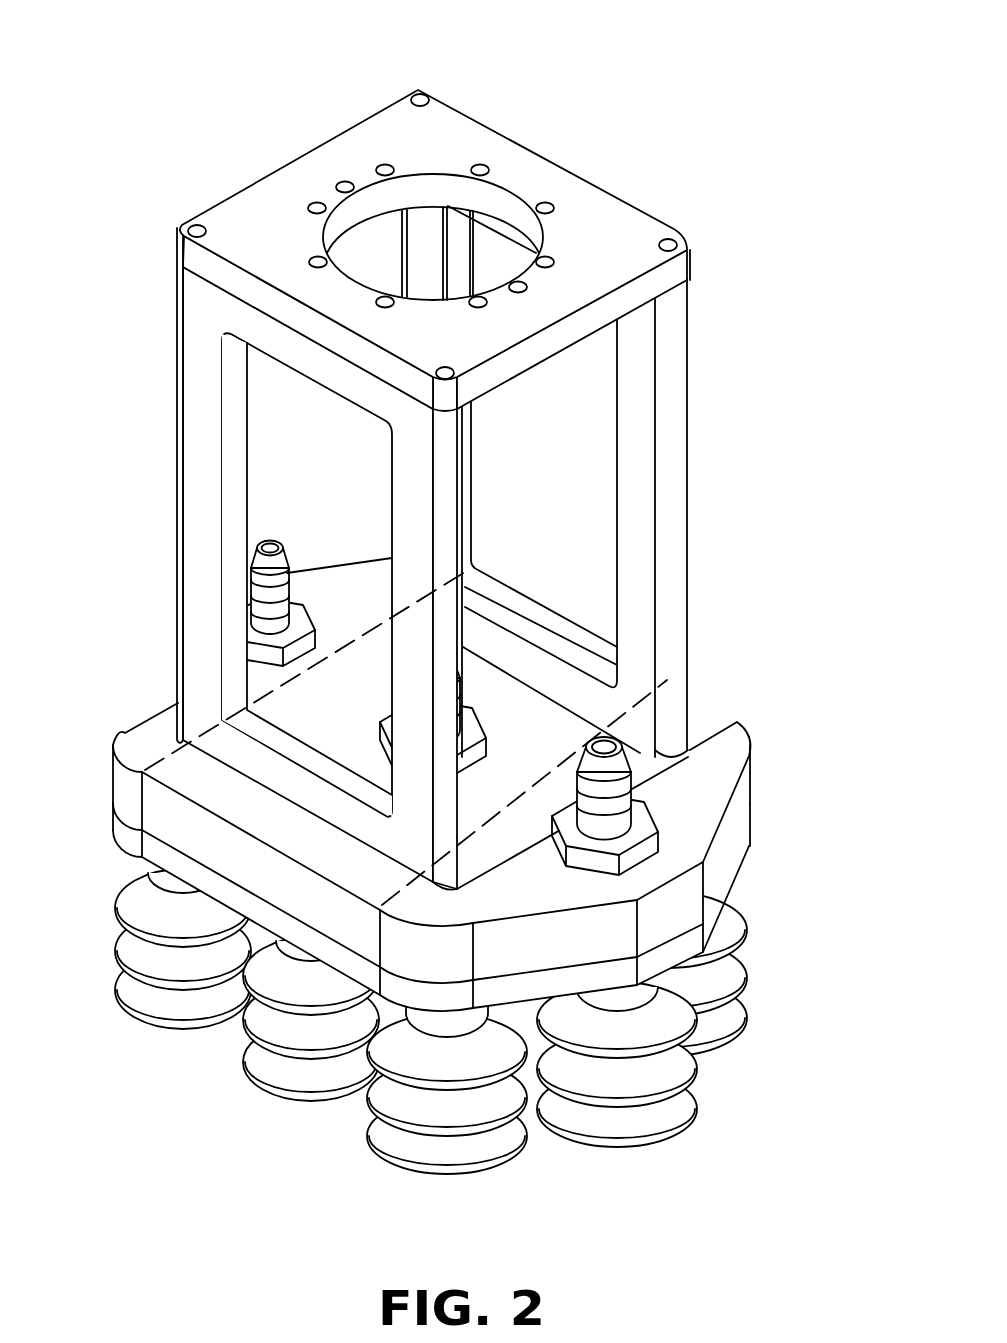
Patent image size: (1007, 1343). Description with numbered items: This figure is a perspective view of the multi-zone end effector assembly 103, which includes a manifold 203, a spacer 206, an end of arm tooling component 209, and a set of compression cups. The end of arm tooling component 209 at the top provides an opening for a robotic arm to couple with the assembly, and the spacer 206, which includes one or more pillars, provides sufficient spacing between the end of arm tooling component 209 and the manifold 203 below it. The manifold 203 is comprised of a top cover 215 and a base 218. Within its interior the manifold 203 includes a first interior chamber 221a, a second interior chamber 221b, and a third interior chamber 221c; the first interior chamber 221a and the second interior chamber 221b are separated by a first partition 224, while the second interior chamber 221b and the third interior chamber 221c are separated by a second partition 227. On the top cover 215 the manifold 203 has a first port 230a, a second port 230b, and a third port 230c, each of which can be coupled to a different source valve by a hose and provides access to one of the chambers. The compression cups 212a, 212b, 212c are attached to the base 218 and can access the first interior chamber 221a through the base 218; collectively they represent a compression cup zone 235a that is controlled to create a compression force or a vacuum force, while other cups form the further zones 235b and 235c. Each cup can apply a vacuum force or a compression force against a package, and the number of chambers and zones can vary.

The multi-zone end effector assembly 103 is at (239, 47).
The end of arm tooling component 209 is at (688, 266).
The spacer 206 is at (690, 468).
The manifold 203 is at (448, 828).
The top cover 215 is at (113, 741).
The base 218 is at (115, 826).
The first interior chamber 221a is at (723, 744).
The second interior chamber 221b is at (290, 818).
The third interior chamber 221c is at (160, 691).
The first partition 224 is at (470, 836).
The second partition 227 is at (300, 673).
The first port 230a is at (632, 780).
The second port 230b is at (466, 706).
The third port 230c is at (290, 597).
The compression cup 212a is at (745, 1005).
The compression cup 212b is at (680, 1130).
The compression cup 212c is at (492, 1160).
The compression cup zone 235a is at (659, 1203).
The zone 235b is at (248, 1119).
The zone 235c is at (101, 1009).